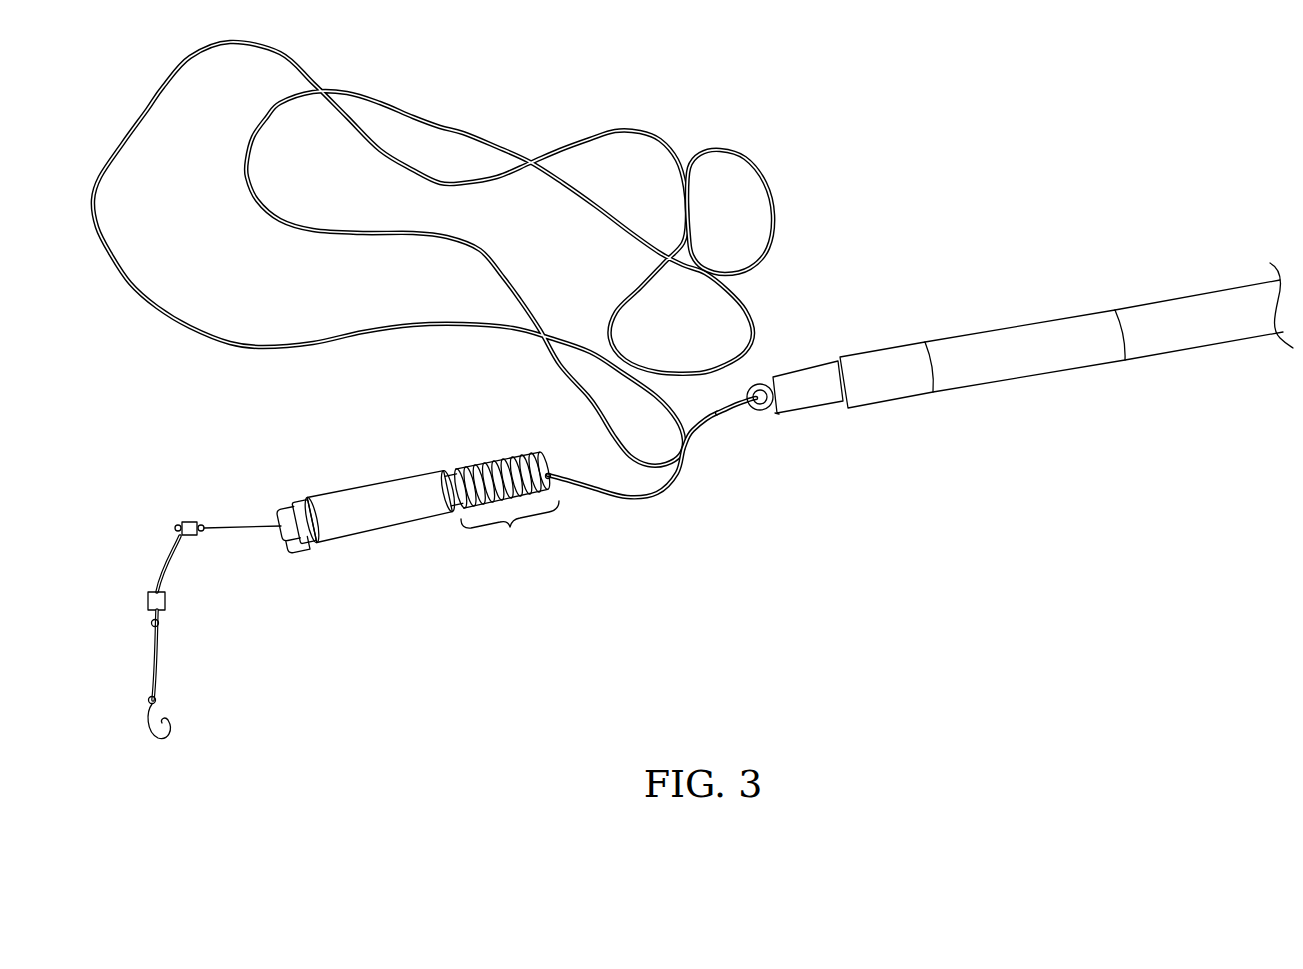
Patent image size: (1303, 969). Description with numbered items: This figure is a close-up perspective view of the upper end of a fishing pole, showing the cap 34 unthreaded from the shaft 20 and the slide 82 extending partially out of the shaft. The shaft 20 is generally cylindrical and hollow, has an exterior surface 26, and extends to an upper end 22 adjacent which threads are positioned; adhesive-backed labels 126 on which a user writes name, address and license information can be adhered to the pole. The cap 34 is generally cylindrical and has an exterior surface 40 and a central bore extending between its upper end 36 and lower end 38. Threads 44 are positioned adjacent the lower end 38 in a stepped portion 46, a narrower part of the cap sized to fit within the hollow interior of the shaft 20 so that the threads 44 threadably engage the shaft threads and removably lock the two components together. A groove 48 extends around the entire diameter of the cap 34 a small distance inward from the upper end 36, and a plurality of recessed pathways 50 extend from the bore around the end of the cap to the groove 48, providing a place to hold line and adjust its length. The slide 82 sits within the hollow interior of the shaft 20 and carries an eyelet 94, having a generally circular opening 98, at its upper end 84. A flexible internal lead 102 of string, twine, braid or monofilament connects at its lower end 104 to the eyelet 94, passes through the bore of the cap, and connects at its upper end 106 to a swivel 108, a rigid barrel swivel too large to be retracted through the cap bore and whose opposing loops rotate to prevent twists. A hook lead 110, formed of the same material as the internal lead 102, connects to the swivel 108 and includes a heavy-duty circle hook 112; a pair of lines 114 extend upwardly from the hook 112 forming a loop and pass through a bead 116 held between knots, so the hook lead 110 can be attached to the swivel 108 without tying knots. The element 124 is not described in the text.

The shaft 20 is at (1028, 352).
The upper end 22 is at (838, 356).
The exterior surface 26 is at (1178, 331).
The labels 126 is at (1018, 331).
The slide 82 is at (797, 358).
The upper end 84 is at (772, 413).
The eyelet 94 is at (751, 411).
The circular opening 98 is at (758, 412).
The lower end 104 is at (740, 407).
The internal lead 102 is at (658, 132).
The cap 34 is at (402, 501).
The upper end 36 is at (293, 529).
The groove 48 is at (304, 521).
The recessed pathways 50 is at (298, 544).
The exterior surface 40 is at (383, 504).
The threads 44 is at (502, 479).
The stepped portion 46 is at (510, 529).
The lower end 38 is at (546, 466).
The upper end 106 is at (204, 524).
The swivel 108 is at (184, 520).
The hook lead 110 is at (153, 627).
The wire fitting block 124 is at (166, 604).
The bead 116 is at (151, 623).
The lines 114 is at (152, 654).
The hook 112 is at (171, 736).